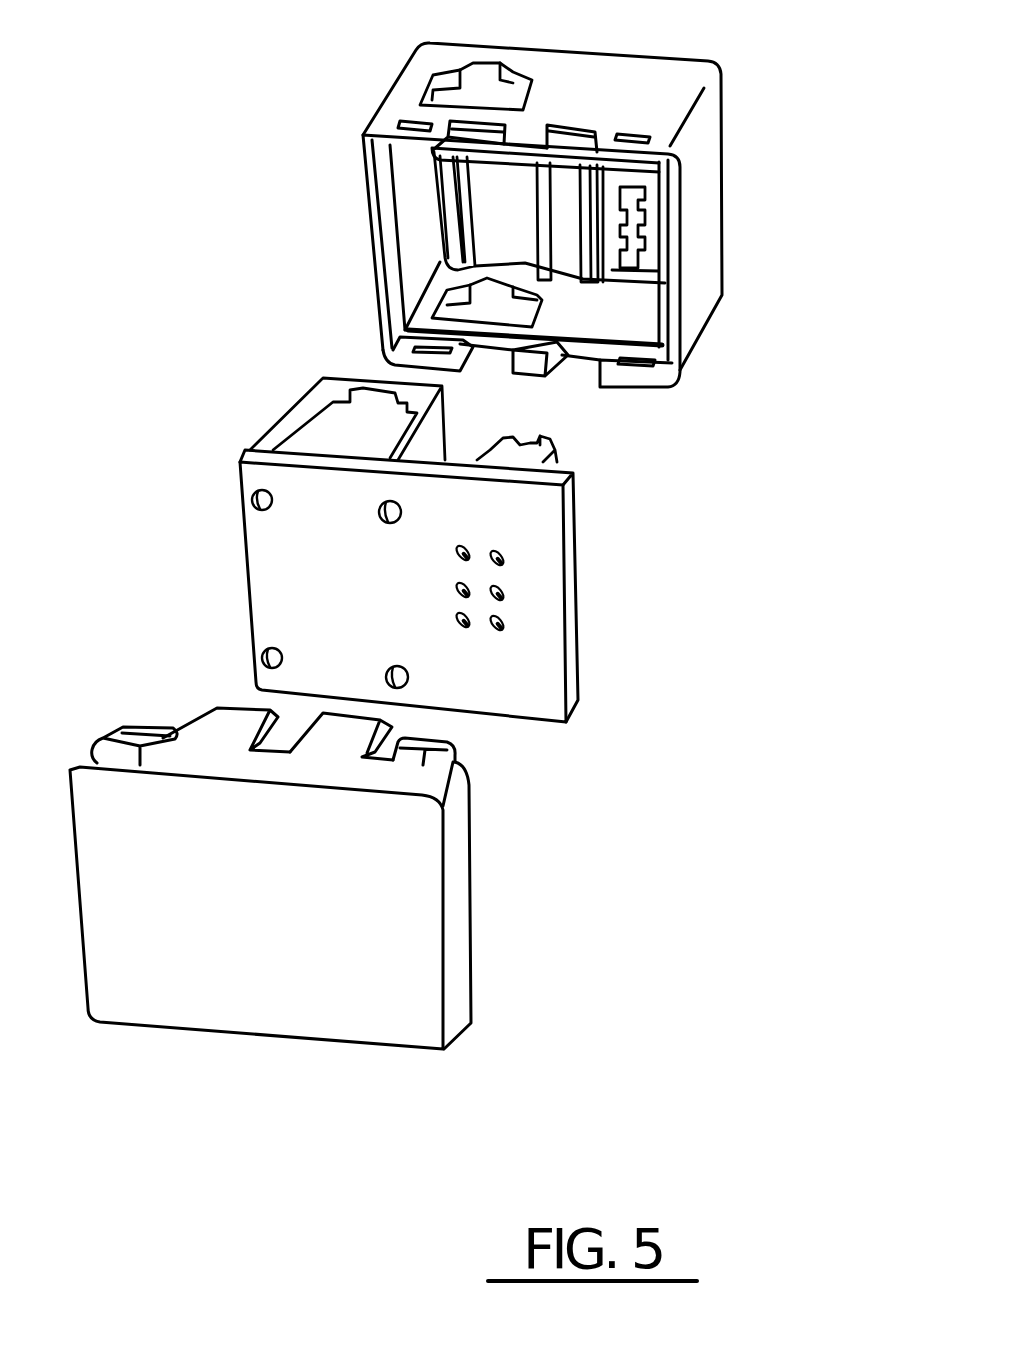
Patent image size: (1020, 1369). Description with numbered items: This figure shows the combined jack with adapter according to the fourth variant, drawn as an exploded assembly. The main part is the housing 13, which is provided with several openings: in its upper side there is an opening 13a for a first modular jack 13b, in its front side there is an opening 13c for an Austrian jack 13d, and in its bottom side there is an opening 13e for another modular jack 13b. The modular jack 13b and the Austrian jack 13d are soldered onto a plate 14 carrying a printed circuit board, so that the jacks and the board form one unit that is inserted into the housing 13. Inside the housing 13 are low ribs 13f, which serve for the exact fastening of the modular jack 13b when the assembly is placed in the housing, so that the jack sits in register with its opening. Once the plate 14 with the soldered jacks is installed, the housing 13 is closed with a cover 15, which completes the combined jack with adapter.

The housing 13 is at (700, 287).
The opening 13a is at (420, 103).
The modular jack 13b is at (313, 400).
The opening 13c is at (633, 215).
The Austrian jack 13d is at (548, 462).
The opening 13e is at (437, 310).
The low ribs 13f is at (442, 210).
The plate with printed circuit board 14 is at (527, 657).
The cover 15 is at (455, 937).